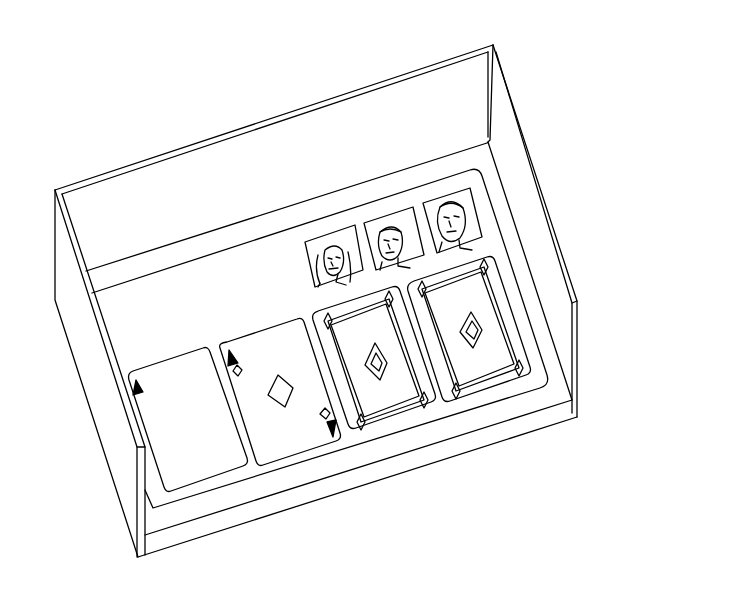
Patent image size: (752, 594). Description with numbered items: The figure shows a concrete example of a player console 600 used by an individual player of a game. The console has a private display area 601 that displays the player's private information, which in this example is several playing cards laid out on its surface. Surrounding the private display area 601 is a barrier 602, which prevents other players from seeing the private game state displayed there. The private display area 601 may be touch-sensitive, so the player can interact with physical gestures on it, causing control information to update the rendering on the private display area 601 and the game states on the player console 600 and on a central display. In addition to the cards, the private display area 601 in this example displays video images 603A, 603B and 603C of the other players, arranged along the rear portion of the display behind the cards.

The player console 600 is at (315, 25).
The private display area 601 is at (443, 410).
The barrier 602 is at (580, 357).
The video image 603A is at (317, 242).
The video image 603B is at (368, 222).
The video image 603C is at (432, 205).